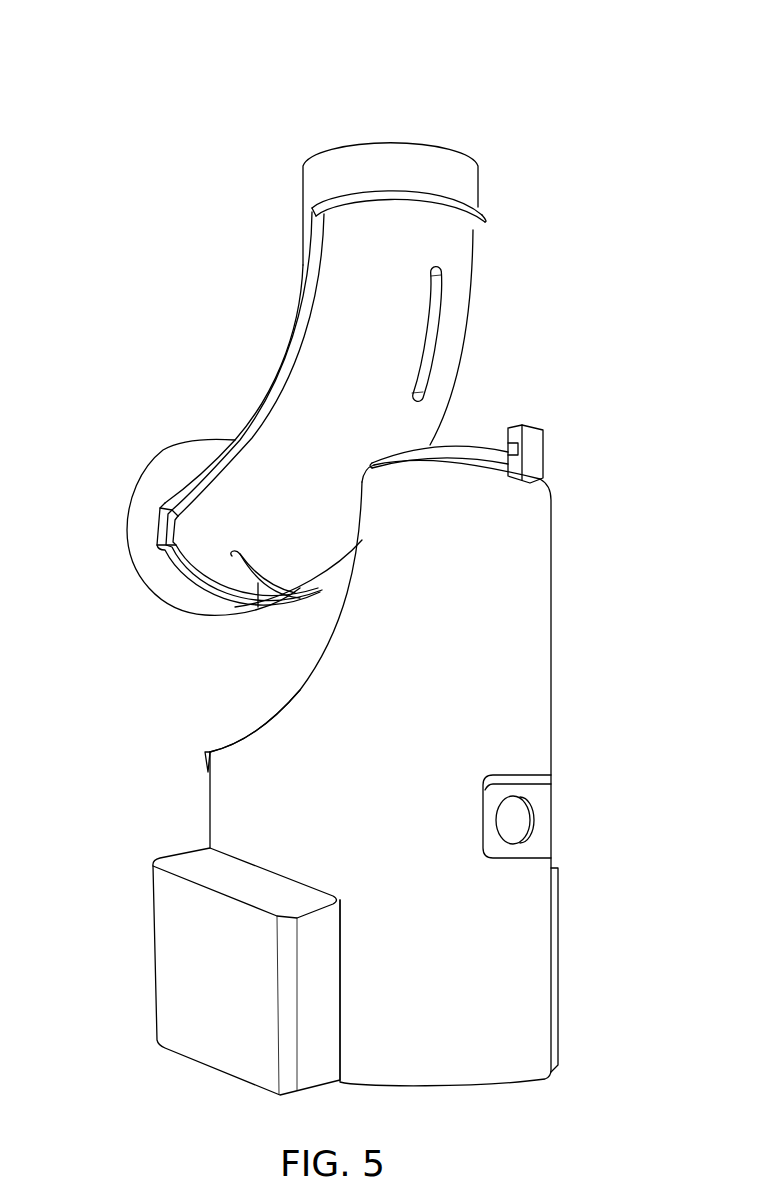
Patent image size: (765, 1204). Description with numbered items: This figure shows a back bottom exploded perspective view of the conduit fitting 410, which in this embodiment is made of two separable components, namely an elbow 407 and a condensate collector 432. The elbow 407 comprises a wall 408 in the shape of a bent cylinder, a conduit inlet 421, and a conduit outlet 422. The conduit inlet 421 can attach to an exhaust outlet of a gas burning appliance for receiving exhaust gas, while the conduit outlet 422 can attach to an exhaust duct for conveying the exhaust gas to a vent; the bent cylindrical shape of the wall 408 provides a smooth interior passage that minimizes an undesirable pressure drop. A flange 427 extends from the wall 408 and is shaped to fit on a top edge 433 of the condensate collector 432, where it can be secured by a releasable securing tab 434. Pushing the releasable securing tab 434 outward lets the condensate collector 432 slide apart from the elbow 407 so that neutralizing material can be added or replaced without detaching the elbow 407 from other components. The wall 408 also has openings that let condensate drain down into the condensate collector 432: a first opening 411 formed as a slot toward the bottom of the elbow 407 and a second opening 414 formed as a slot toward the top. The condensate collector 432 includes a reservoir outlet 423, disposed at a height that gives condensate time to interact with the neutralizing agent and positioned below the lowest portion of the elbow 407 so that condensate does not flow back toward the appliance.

The conduit fitting 410 is at (588, 64).
The conduit outlet 422 is at (403, 175).
The wall 408 is at (323, 180).
The flange 427 is at (485, 214).
The second opening 414 is at (433, 325).
The elbow 407 is at (211, 414).
The conduit inlet 421 is at (122, 585).
The first opening 411 is at (262, 613).
The top edge 433 is at (297, 707).
The releasable securing tab 434 is at (545, 462).
The reservoir outlet 423 is at (515, 828).
The condensate collector 432 is at (528, 1034).